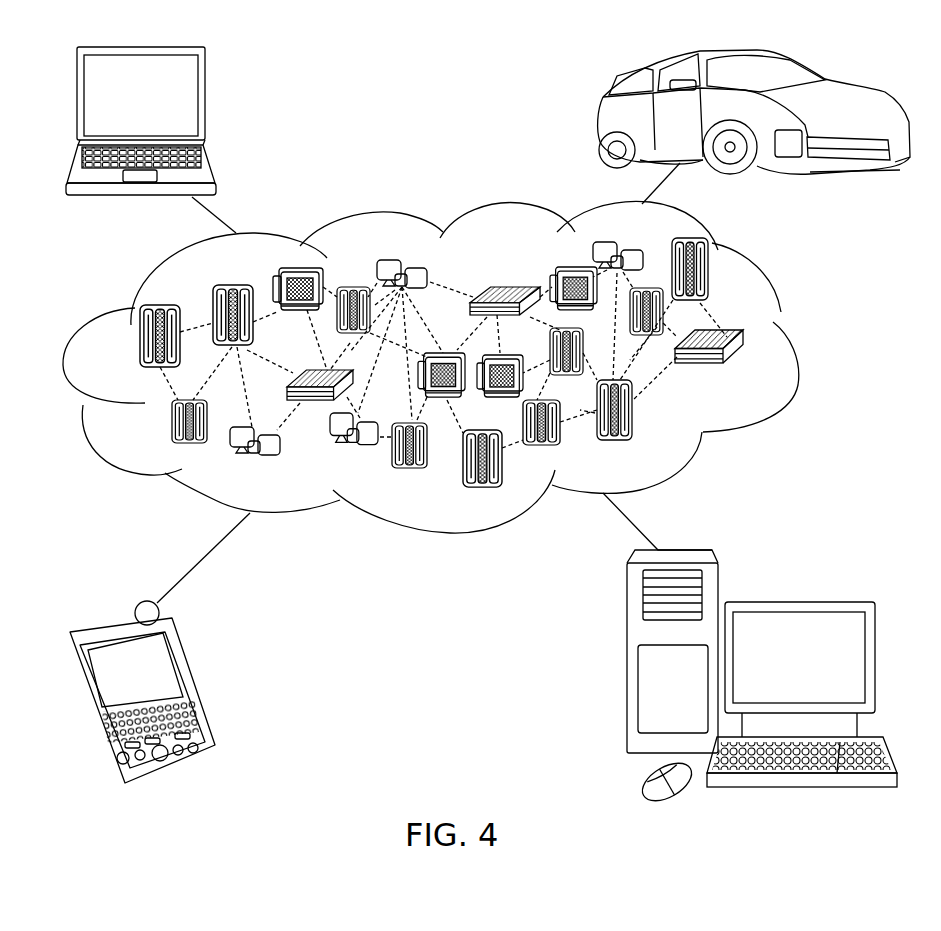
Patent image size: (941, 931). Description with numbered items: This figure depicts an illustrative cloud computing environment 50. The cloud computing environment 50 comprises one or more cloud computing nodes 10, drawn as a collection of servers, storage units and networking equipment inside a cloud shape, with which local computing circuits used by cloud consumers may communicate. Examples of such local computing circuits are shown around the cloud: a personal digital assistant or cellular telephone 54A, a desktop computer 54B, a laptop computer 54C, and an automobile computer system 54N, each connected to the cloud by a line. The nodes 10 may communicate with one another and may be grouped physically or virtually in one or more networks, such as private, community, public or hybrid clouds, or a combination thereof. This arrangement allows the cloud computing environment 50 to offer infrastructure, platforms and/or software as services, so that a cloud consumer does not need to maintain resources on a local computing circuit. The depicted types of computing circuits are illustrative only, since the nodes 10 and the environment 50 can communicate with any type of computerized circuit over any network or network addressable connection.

The cloud computing environment 50 is at (796, 346).
The cloud computing node 10 is at (745, 371).
The personal digital assistant or cellular telephone 54A is at (195, 684).
The desktop computer 54B is at (795, 601).
The laptop computer 54C is at (205, 101).
The automobile computer system 54N is at (604, 117).